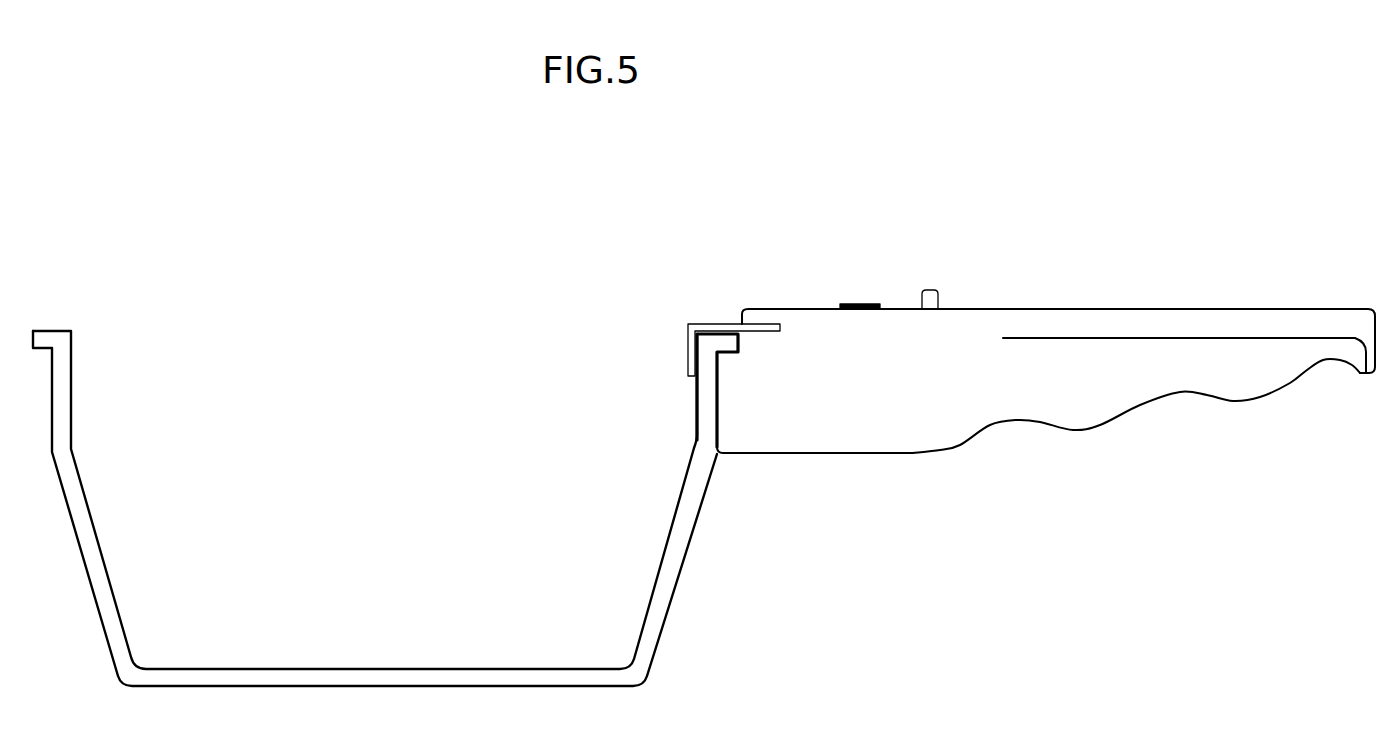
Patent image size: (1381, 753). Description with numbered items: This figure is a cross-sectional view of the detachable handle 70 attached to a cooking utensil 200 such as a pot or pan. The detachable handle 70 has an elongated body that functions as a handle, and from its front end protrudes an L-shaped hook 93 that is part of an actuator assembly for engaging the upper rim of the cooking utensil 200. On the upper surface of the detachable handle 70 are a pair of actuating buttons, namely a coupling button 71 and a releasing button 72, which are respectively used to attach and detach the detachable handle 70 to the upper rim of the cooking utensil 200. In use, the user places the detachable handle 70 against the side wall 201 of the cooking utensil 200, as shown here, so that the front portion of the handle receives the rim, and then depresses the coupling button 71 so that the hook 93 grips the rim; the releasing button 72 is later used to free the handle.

The detachable handle 70 is at (1038, 327).
The coupling button 71 is at (857, 305).
The releasing button 72 is at (930, 290).
The L-shaped hook 93 is at (688, 333).
The cooking utensil 200 is at (643, 638).
The side wall 201 is at (705, 388).